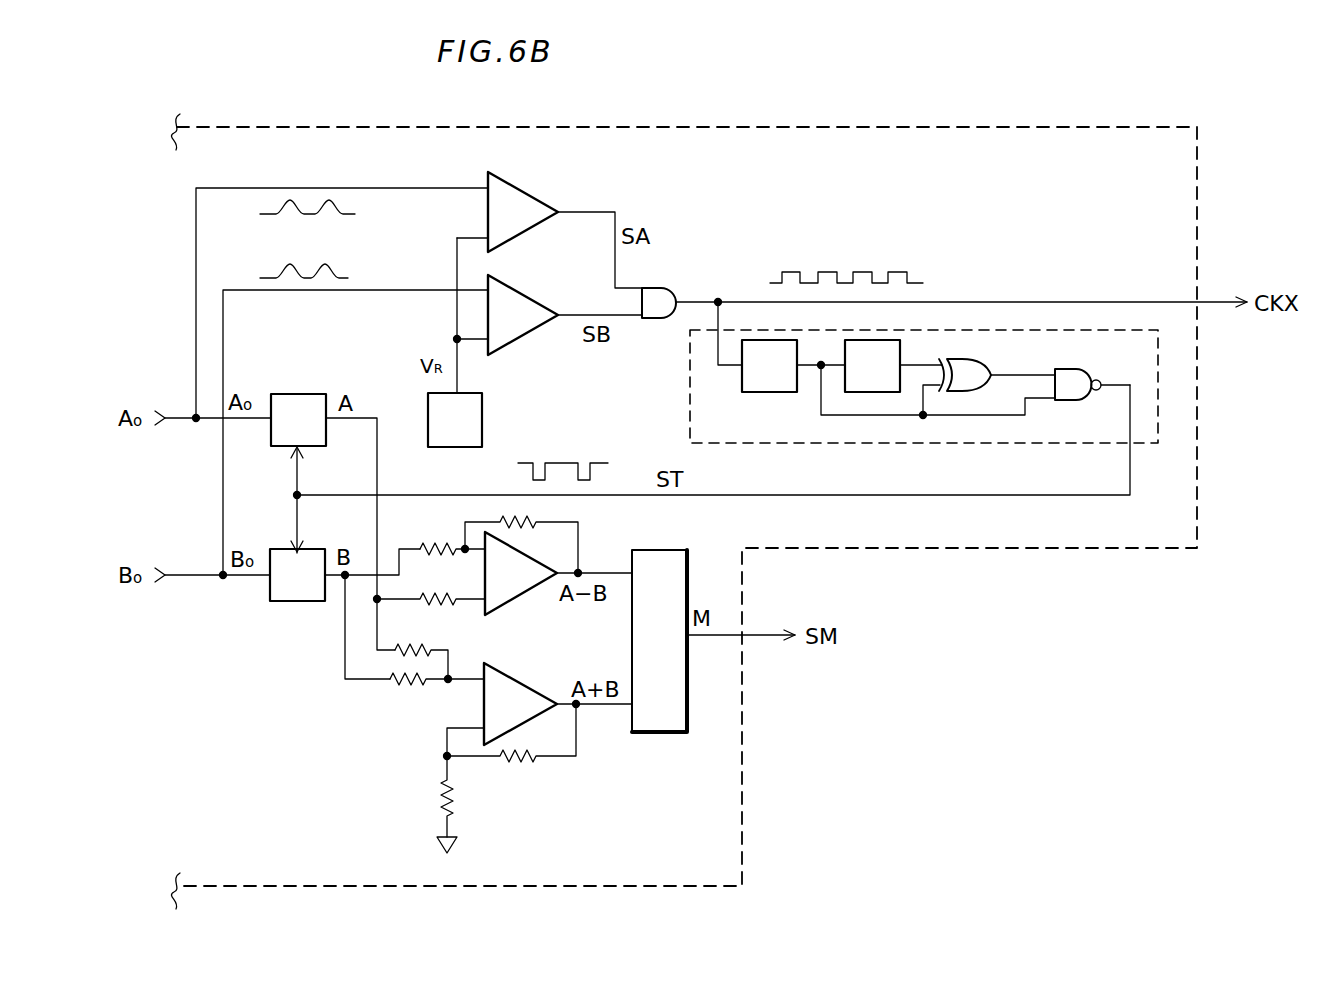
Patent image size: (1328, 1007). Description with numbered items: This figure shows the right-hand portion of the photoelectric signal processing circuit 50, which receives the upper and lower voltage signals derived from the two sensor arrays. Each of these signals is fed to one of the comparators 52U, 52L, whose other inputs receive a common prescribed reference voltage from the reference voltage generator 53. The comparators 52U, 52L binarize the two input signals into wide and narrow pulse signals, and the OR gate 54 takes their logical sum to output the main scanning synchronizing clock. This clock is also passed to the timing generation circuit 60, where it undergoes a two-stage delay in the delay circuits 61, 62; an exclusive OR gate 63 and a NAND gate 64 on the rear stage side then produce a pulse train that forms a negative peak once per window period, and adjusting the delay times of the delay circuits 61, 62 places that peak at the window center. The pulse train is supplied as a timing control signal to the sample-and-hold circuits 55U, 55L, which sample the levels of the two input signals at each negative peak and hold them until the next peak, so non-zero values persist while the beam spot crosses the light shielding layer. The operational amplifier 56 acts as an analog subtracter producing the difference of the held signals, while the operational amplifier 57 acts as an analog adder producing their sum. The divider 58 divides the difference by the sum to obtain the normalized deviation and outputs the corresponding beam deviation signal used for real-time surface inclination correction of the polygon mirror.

The photoelectric signal processing circuit 50 is at (857, 127).
The comparator 52U is at (522, 184).
The comparator 52L is at (515, 285).
The reference voltage generator 53 is at (482, 418).
The OR gate 54 is at (657, 280).
The sample-and-hold circuit 55U is at (293, 394).
The sample-and-hold circuit 55L is at (296, 601).
The operational amplifier 56 is at (522, 600).
The operational amplifier 57 is at (510, 673).
The divider 58 is at (658, 550).
The timing generation circuit 60 is at (690, 426).
The delay circuit 61 is at (746, 392).
The delay circuit 62 is at (900, 357).
The exclusive OR gate 63 is at (982, 362).
The NAND gate 64 is at (1077, 368).